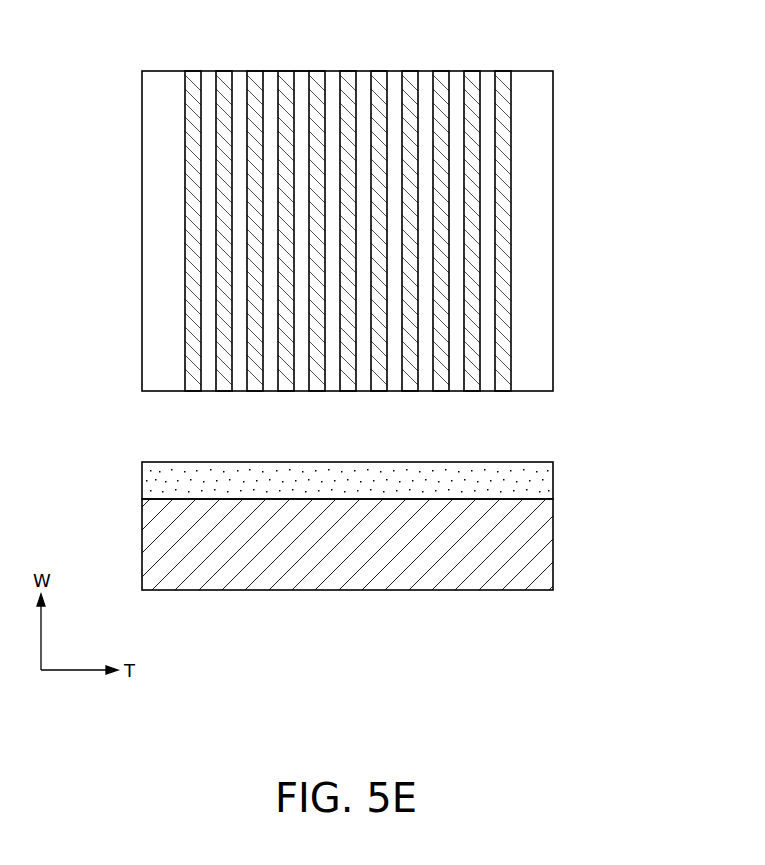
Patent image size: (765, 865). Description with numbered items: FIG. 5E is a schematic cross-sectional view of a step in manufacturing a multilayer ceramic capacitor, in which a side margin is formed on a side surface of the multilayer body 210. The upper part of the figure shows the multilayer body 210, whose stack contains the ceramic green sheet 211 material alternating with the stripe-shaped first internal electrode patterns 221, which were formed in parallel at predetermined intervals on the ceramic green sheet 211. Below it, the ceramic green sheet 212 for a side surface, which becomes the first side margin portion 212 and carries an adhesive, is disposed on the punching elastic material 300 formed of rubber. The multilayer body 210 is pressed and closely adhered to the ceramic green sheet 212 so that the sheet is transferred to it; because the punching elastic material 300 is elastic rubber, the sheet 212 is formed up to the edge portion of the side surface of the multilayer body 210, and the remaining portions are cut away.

The multilayer body 210 is at (567, 139).
The ceramic green sheet 211 is at (302, 77).
The first internal electrode pattern 221 is at (226, 74).
The first side margin portion 212 is at (536, 477).
The punching elastic material 300 is at (538, 540).